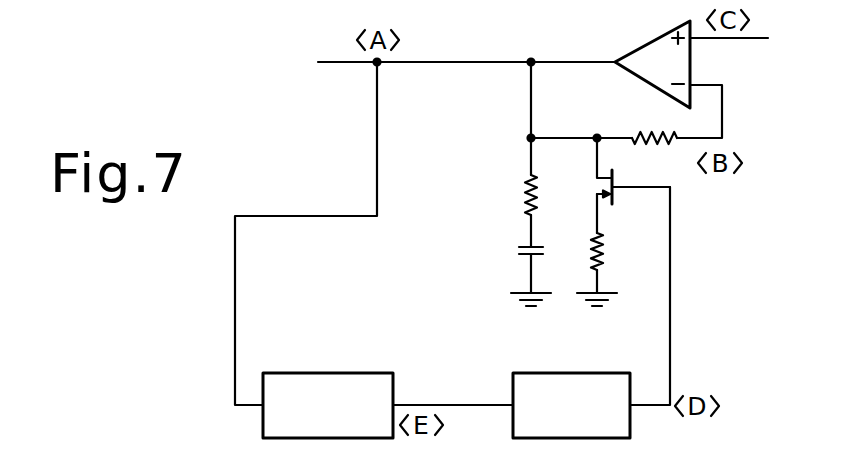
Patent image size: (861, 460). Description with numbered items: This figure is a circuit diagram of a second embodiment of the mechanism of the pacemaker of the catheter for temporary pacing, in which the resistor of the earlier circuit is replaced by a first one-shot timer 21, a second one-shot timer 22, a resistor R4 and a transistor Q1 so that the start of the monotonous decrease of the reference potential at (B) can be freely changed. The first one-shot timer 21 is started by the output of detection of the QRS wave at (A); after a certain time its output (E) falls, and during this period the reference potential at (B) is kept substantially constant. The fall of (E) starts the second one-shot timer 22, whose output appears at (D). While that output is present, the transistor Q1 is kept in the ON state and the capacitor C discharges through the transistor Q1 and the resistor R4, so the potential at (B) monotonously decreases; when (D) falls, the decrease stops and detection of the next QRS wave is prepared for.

The first one-shot timer 21 is at (328, 405).
The second one-shot timer 22 is at (571, 405).
The transistor Q1 is at (633, 171).
The resistor R4 is at (611, 243).